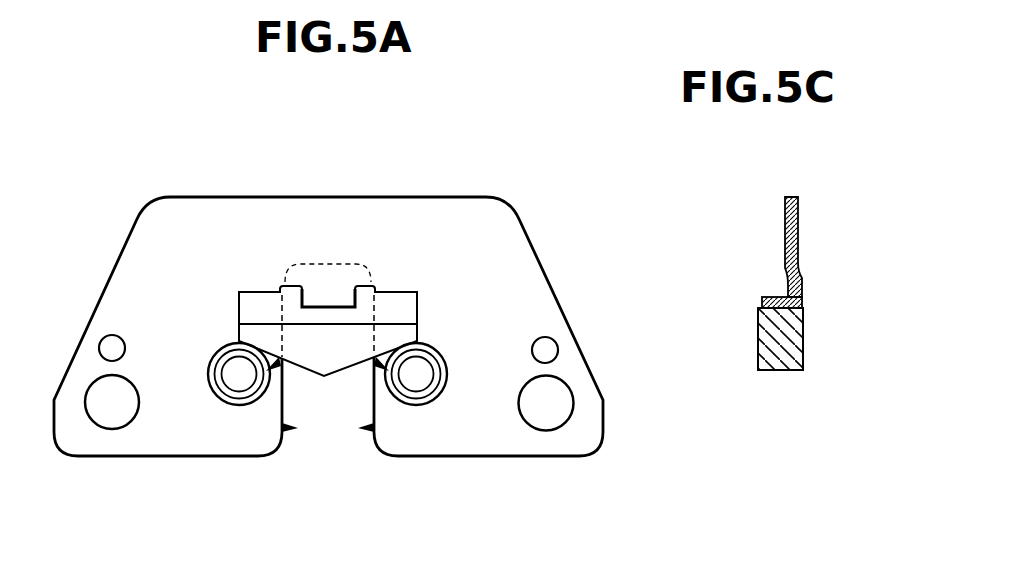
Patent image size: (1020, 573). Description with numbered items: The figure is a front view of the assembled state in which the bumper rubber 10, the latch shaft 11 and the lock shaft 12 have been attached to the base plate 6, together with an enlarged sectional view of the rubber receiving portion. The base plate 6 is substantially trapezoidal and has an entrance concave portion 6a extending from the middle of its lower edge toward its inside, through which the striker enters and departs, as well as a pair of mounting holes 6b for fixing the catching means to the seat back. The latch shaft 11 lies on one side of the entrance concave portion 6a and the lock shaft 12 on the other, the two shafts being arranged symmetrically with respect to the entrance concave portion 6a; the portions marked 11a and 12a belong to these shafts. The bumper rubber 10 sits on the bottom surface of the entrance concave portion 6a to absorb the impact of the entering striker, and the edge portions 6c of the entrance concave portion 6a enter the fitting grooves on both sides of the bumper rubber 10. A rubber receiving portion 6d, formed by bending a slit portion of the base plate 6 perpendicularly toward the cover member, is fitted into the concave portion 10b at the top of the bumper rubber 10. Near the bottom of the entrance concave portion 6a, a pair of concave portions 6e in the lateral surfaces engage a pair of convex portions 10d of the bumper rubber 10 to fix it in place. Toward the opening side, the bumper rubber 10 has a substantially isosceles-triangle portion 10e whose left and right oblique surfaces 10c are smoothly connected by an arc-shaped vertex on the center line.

In FIG. 5A, the base plate 6 is at (197, 214).
In FIG. 5A, the entrance concave portion 6a is at (335, 365).
In FIG. 5A, the mounting holes 6b is at (110, 405).
In FIG. 5A, the edge portions of the entrance concave portion 6c is at (297, 431).
In FIG. 5A, the rubber receiving portion 6d is at (329, 397).
In FIG. 5C, the rubber receiving portion 6d is at (762, 302).
In FIG. 5A, the concave portions 6e is at (279, 302).
In FIG. 5A, the bumper rubber 10 is at (421, 308).
In FIG. 5C, the bumper rubber 10 is at (780, 368).
In FIG. 5A, the concave portion 10b is at (318, 296).
In FIG. 5C, the concave portion 10b is at (779, 296).
In FIG. 5A, the oblique surfaces 10c is at (265, 378).
In FIG. 5A, the convex portions 10d is at (380, 302).
In FIG. 5A, the substantially isosceles-triangle portion 10e is at (358, 355).
In FIG. 5A, the latch shaft 11 is at (417, 373).
In FIG. 5A, the flange of right bushing 11a is at (430, 348).
In FIG. 5A, the lock shaft 12 is at (237, 373).
In FIG. 5A, the flange of left bushing 12a is at (226, 348).